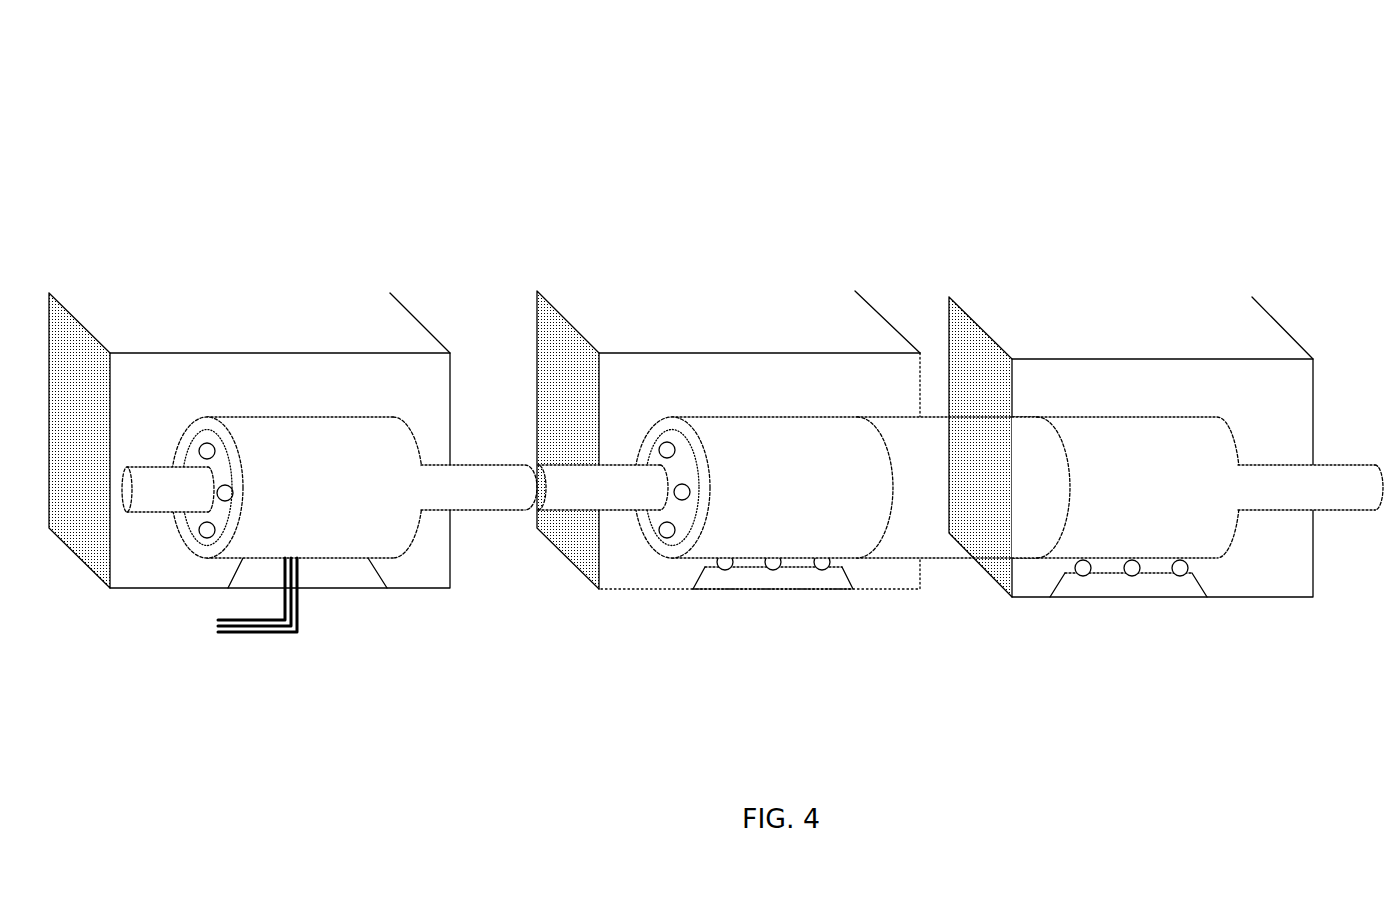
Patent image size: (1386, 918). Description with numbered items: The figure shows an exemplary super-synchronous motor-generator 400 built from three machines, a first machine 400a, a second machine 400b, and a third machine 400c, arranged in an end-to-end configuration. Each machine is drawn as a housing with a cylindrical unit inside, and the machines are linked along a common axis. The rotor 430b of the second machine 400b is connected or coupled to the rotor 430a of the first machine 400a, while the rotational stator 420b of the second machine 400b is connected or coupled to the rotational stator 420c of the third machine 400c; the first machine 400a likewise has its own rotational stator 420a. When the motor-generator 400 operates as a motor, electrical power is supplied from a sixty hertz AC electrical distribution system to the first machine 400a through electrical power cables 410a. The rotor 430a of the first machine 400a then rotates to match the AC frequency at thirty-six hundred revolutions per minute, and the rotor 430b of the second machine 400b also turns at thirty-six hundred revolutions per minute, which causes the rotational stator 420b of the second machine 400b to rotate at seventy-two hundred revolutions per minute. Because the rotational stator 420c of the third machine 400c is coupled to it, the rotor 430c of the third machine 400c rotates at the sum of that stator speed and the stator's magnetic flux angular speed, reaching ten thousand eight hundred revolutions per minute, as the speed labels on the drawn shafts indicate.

The super-synchronous motor-generator 400 is at (337, 64).
The first machine 400a is at (262, 240).
The second machine 400b is at (712, 240).
The third machine 400c is at (1107, 251).
The electrical power cables 410a is at (257, 627).
The rotational stator 420a is at (373, 561).
The rotational stator 420b is at (843, 561).
The rotational stator 420c is at (1050, 561).
The rotor 430a is at (160, 513).
The rotor 430b is at (552, 512).
The rotor 430c is at (1290, 512).